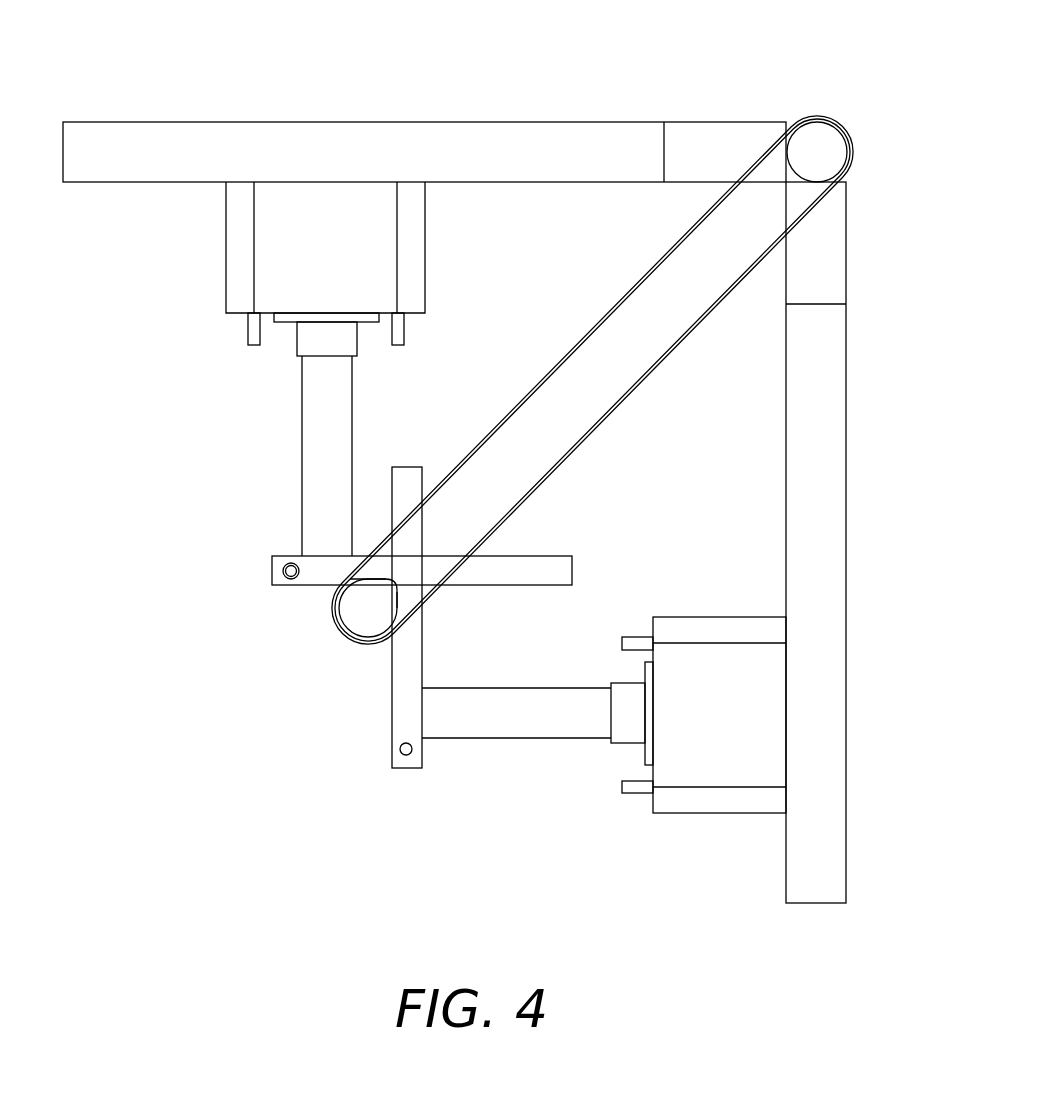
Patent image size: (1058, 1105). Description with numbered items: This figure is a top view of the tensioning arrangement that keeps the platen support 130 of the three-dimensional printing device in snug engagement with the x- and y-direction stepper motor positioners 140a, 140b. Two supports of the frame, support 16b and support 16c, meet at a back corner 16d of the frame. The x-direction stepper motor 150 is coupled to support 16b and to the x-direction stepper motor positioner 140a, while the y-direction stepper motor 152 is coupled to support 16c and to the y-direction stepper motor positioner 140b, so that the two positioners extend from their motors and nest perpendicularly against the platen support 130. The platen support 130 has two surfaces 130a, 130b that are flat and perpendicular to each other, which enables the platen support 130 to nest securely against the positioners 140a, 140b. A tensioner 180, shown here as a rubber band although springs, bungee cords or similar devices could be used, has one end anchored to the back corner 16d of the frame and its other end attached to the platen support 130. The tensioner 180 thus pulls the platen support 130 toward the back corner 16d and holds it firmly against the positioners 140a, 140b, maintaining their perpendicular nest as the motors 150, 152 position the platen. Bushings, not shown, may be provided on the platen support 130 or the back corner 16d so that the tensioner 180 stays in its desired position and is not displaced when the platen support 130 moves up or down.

The support 16b is at (193, 138).
The support 16c is at (811, 847).
The back corner 16d is at (820, 140).
The x-direction stepper motor 150 is at (303, 255).
The y-direction stepper motor 152 is at (740, 678).
The platen support 130 is at (391, 522).
The surface 130a is at (365, 575).
The surface 130b is at (392, 605).
The x-direction stepper motor positioner 140a is at (270, 570).
The y-direction stepper motor positioner 140b is at (402, 727).
The tensioner 180 is at (620, 402).